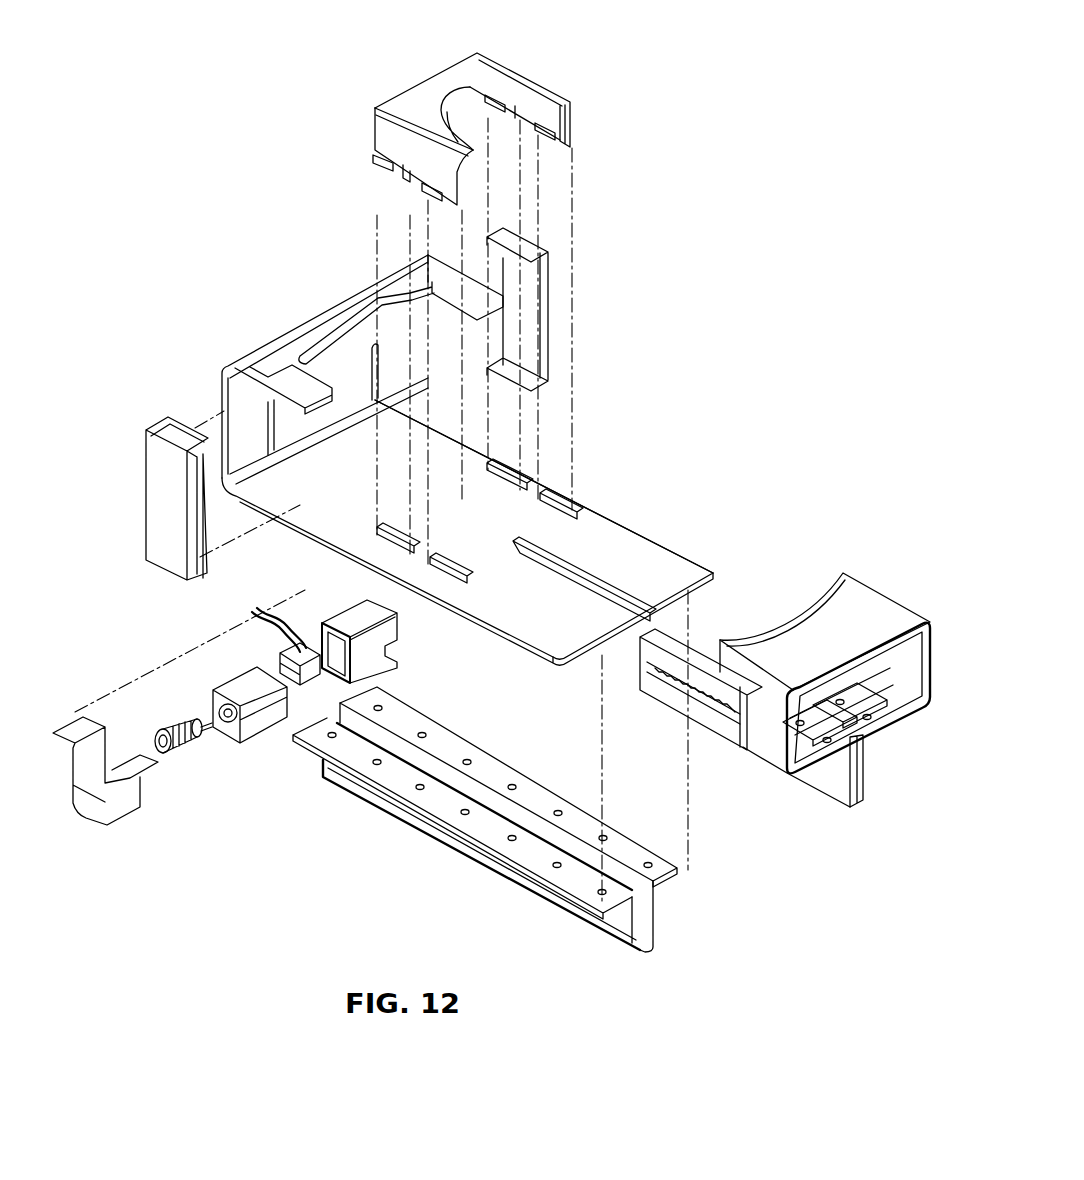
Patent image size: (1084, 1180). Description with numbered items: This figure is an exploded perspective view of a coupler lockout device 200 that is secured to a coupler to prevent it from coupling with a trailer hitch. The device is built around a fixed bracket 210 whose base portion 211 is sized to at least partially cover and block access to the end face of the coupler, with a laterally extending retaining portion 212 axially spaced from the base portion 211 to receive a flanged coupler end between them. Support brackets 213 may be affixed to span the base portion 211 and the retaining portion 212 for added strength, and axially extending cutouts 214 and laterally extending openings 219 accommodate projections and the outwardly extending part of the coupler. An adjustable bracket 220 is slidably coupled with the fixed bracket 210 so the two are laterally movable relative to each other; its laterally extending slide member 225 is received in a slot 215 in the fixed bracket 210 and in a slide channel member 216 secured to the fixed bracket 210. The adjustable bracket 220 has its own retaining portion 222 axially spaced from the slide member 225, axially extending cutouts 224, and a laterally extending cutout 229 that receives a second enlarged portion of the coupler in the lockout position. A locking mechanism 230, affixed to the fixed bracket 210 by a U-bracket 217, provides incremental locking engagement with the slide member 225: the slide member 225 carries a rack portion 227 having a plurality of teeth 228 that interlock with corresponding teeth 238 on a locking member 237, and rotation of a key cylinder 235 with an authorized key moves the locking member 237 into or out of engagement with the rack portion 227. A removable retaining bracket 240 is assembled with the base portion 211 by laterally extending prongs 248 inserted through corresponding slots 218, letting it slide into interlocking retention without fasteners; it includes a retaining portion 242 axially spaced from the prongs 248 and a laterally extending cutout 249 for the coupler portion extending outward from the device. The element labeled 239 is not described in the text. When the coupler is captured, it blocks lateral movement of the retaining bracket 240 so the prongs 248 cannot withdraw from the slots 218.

The lockout device 200 is at (722, 160).
The fixed bracket 210 is at (633, 434).
The base portion 211 is at (467, 473).
The retaining portion 212 is at (267, 371).
The support brackets 213 is at (168, 428).
The axially extending cutouts 214 is at (364, 375).
The slot 215 is at (593, 582).
The slide channel member 216 is at (538, 865).
The U-bracket 217 is at (130, 825).
The slots 218 is at (433, 557).
The laterally extending cutouts 219 is at (347, 315).
The adjustable bracket 220 is at (892, 762).
The retaining portion 222 is at (787, 657).
The axially extending cutouts 224 is at (910, 667).
The slide member 225 is at (712, 725).
The rack portion 227 is at (697, 720).
The teeth 228 is at (683, 690).
The laterally extending cutout 229 is at (767, 633).
The locking mechanism 230 is at (231, 680).
The key cylinder 235 is at (200, 742).
The locking member 237 is at (365, 699).
The teeth 238 is at (272, 631).
The connector 239 is at (405, 661).
The retaining bracket 240 is at (364, 95).
The retaining portion 242 is at (527, 97).
The prongs 248 is at (430, 192).
The laterally extending cutout 249 is at (453, 100).